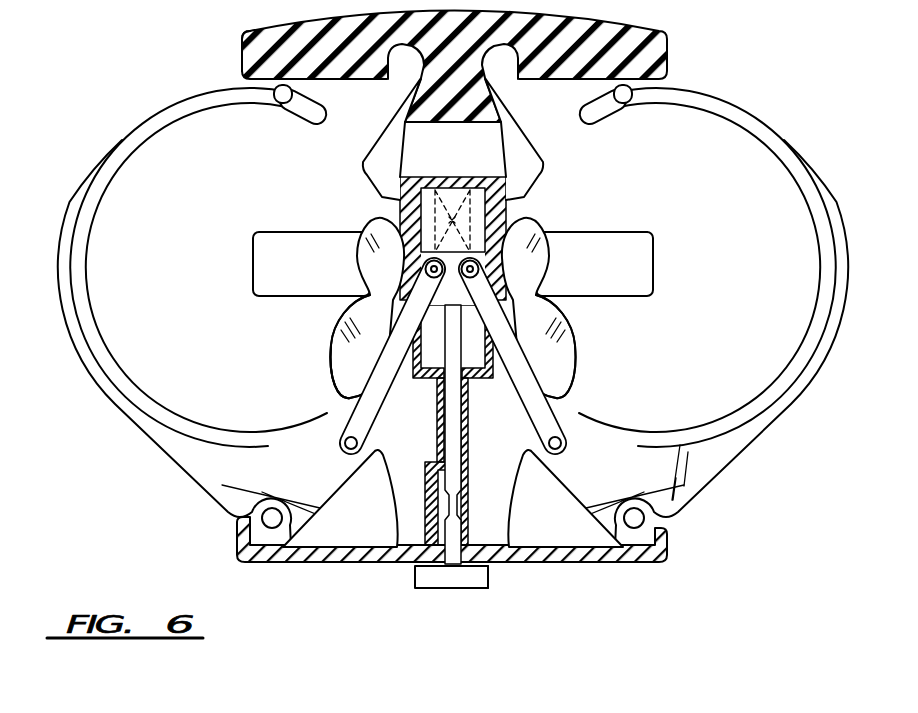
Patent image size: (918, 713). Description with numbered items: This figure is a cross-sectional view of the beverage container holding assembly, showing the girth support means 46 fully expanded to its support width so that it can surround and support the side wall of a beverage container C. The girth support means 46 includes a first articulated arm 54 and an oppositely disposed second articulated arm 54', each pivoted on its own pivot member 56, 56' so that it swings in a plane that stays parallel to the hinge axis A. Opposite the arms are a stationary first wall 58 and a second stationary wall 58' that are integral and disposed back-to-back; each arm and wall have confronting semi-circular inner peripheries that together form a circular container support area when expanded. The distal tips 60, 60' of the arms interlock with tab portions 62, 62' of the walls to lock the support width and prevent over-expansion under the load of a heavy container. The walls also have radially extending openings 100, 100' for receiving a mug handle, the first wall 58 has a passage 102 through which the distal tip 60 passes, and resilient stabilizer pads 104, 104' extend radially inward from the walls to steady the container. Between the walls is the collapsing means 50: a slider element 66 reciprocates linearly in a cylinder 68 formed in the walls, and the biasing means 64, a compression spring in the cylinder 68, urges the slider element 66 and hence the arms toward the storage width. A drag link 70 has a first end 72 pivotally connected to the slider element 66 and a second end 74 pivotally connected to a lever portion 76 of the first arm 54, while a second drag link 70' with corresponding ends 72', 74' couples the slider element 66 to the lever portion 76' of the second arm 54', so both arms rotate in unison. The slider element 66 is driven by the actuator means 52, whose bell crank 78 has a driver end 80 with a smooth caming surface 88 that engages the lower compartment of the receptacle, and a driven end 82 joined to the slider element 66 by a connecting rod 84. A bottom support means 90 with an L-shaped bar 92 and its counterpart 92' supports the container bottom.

The girth support means 46 is at (150, 113).
The collapsing means 50 is at (498, 586).
The actuator means 52 is at (464, 462).
The first articulated arm 54 is at (713, 258).
The second articulated arm 54' is at (183, 267).
The pivot member 56 is at (717, 343).
The second pivot member 56' is at (189, 343).
The stationary first wall 58 is at (649, 117).
The second stationary wall 58' is at (244, 125).
The distal tip 60 is at (576, 106).
The distal tip 60' is at (328, 106).
The tab portion 62 is at (491, 66).
The tab portion 62' is at (210, 51).
The biasing means 64 is at (428, 229).
The slider element 66 is at (347, 369).
The cylinder 68 is at (468, 390).
The drag link 70 is at (548, 352).
The second drag link 70' is at (351, 352).
The first end 72 is at (548, 308).
The roller 72' is at (367, 308).
The second end 74 is at (588, 448).
The pivot 74' is at (321, 456).
The lever portion 76 is at (565, 498).
The lever portion 76' is at (340, 498).
The bell crank 78 is at (467, 523).
The driver end 80 is at (415, 576).
The driven end 82 is at (433, 470).
The connecting rod 84 is at (438, 408).
The caming surface 88 is at (453, 584).
The bottom support means 90 is at (663, 224).
The L-shaped bar 92 is at (637, 264).
The bar 92' is at (273, 264).
The radially extending opening 100 is at (543, 122).
The arm 100' is at (360, 122).
The passage 102 is at (478, 180).
The resilient stabilizer pad 104 is at (585, 346).
The second stabilizer pad 104' is at (321, 346).